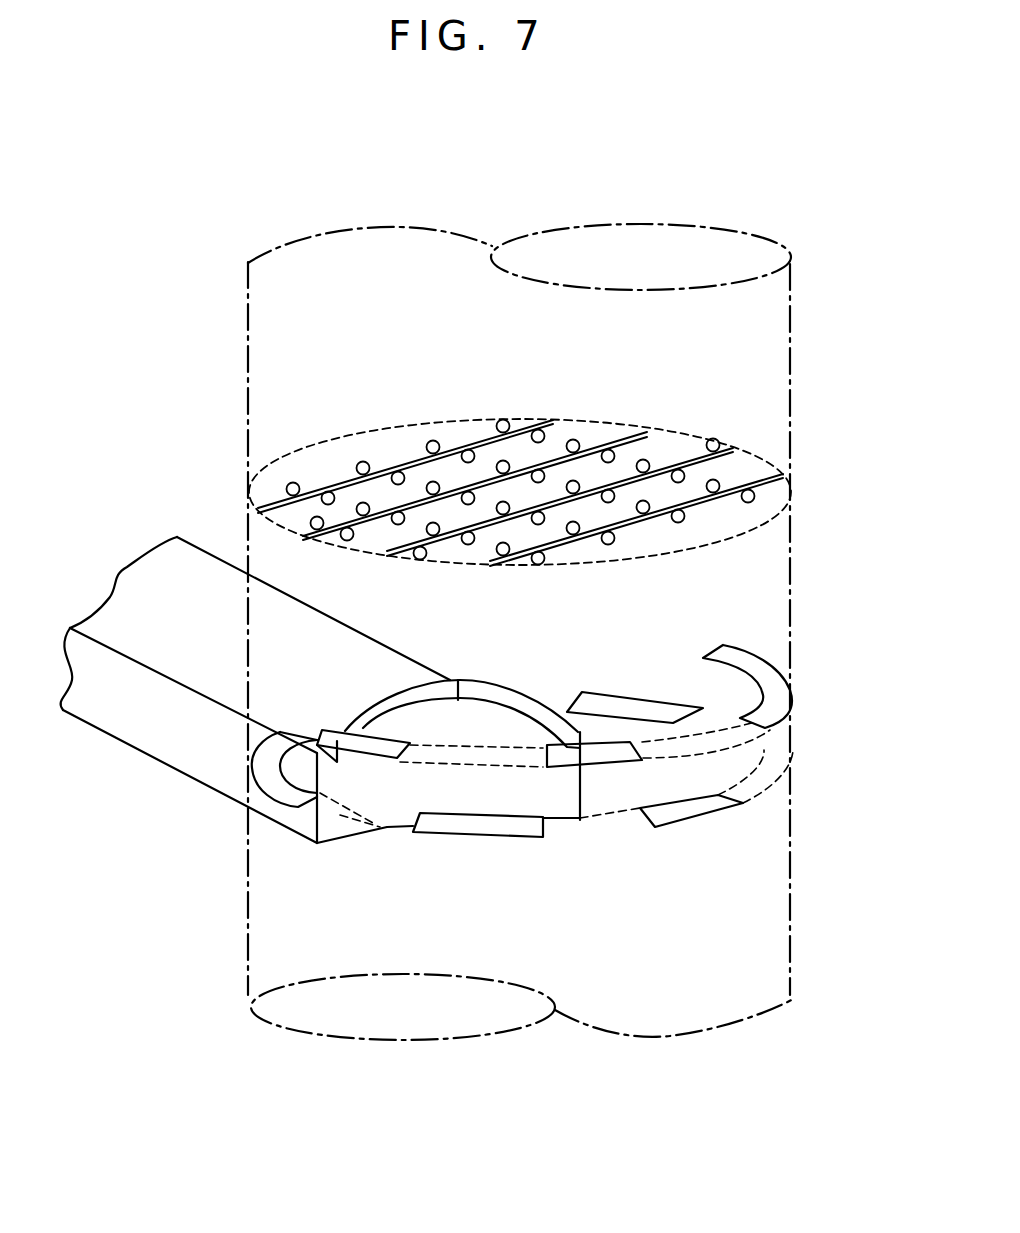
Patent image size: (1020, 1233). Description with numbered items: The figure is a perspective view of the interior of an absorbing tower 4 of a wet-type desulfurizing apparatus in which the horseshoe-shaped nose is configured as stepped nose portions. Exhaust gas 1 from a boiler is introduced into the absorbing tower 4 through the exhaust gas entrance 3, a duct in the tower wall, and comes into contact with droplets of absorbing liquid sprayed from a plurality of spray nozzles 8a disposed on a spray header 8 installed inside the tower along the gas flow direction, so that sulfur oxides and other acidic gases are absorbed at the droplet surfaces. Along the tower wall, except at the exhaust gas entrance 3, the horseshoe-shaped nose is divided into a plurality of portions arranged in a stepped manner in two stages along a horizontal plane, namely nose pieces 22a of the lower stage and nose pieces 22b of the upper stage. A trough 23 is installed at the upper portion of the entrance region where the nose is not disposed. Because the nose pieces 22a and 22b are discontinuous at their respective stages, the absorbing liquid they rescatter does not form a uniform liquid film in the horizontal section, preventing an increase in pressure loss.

The exhaust gas 1 is at (91, 572).
The exhaust gas entrance 3 is at (205, 560).
The absorbing tower 4 is at (206, 368).
The spray header 8 is at (766, 484).
The spray nozzle 8a is at (432, 440).
The nose pieces of a lower stage 22a is at (627, 692).
The nose pieces of an upper stage 22b is at (772, 655).
The trough 23 is at (493, 685).